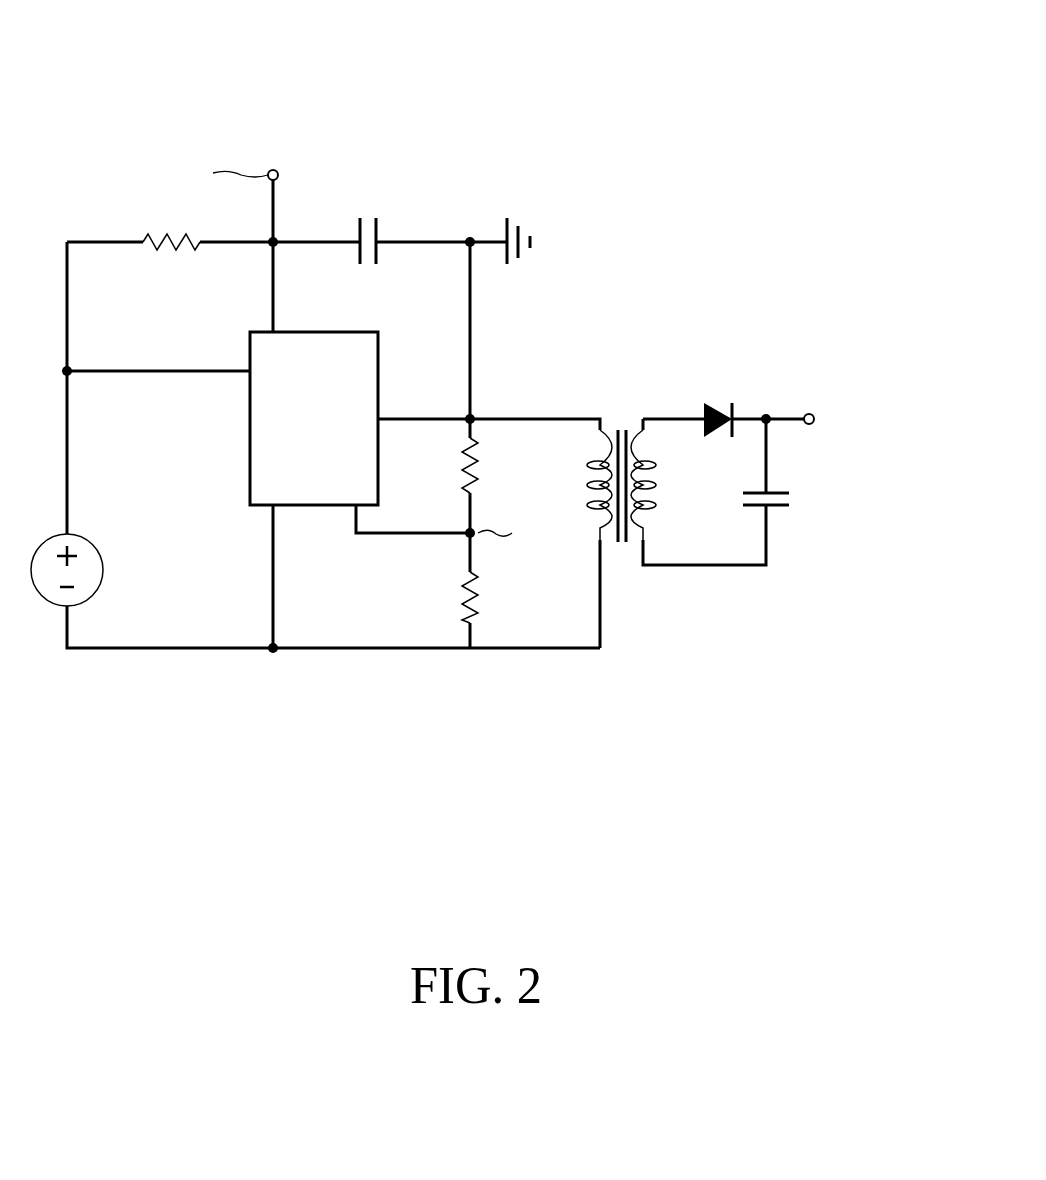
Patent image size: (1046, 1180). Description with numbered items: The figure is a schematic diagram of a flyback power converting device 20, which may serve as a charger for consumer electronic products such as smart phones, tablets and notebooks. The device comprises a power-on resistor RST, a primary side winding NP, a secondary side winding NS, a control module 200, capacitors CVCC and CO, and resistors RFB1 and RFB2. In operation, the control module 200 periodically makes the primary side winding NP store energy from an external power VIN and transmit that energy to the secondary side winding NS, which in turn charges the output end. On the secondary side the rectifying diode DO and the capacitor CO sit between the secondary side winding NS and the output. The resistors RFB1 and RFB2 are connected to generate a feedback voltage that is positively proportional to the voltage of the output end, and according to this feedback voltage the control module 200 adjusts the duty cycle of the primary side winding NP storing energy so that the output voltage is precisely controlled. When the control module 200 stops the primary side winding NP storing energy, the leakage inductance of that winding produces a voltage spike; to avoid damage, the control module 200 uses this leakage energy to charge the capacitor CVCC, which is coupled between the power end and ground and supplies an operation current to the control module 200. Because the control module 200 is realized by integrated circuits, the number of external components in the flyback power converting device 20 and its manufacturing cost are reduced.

The flyback power converting device 20 is at (716, 100).
The control module 200 is at (315, 507).
The external power VIN is at (103, 568).
The power-on resistor RST is at (171, 262).
The resistor RFB1 is at (505, 465).
The resistor RFB2 is at (505, 597).
The capacitor CVCC is at (382, 221).
The capacitor CO is at (743, 494).
The output diode DO is at (719, 402).
The primary side winding NP is at (585, 461).
The secondary side winding NS is at (649, 461).